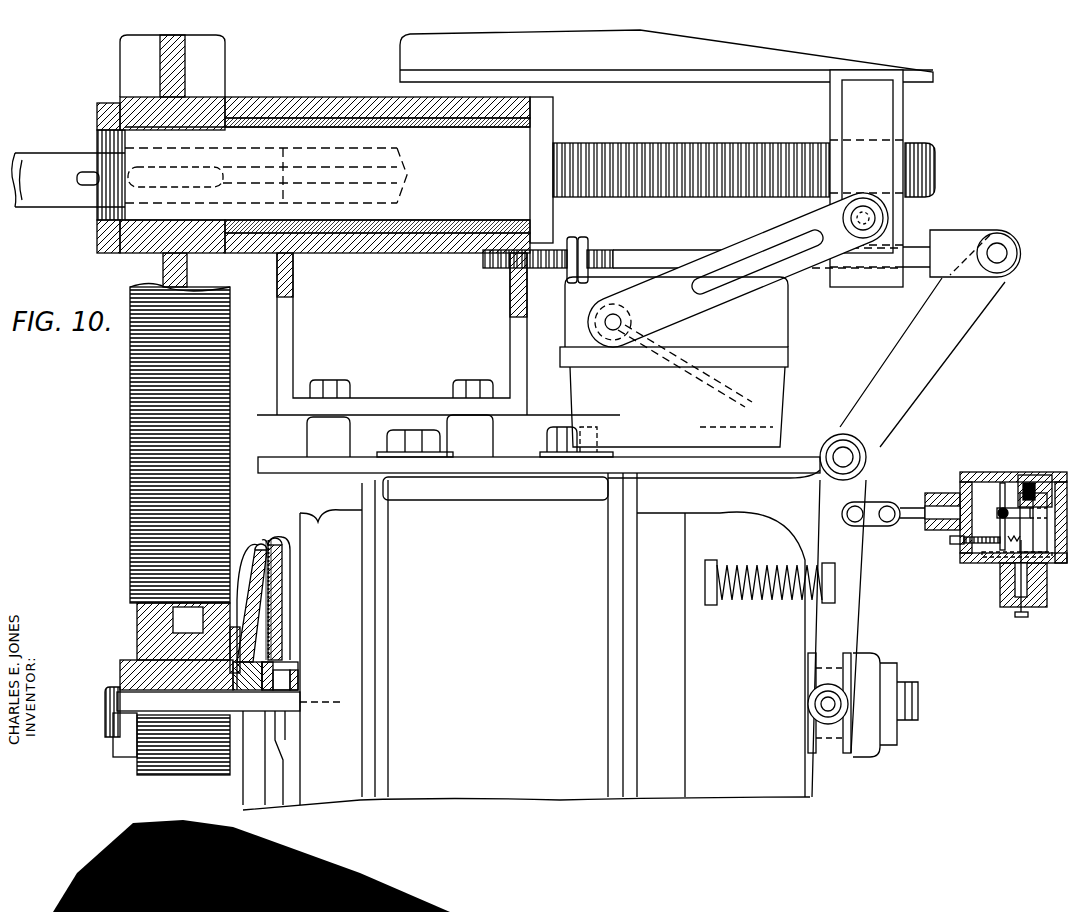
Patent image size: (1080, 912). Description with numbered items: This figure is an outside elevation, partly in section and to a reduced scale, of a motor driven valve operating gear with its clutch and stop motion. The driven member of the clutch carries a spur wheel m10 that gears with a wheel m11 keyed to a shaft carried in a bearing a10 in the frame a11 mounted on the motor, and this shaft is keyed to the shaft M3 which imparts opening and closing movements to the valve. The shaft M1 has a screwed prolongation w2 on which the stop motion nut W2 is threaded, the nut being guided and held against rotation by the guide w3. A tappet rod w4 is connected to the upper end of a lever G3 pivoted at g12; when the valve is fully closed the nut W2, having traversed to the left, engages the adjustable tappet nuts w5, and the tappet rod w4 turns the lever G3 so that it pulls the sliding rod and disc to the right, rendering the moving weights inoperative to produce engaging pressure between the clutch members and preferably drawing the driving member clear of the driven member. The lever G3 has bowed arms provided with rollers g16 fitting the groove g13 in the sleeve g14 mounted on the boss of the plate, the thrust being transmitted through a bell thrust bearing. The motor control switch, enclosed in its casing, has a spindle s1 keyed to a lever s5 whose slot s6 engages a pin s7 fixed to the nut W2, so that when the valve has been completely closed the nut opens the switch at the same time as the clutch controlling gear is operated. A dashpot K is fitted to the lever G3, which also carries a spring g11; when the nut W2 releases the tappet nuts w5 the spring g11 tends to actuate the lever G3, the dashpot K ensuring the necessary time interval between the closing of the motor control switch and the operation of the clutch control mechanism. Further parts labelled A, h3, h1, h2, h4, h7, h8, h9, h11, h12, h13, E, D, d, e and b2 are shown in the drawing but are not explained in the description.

The shaft M3 is at (37, 163).
The shaft M1 is at (440, 193).
The frame a11 is at (293, 107).
The bearing a10 is at (337, 235).
The guide w3 is at (757, 78).
The screwed prolongation w2 is at (637, 157).
The stop motion nut W2 is at (873, 117).
The tappet rod w4 is at (665, 257).
The adjustable tappet nuts w5 is at (582, 243).
The lever s5 is at (708, 297).
The slot s6 is at (813, 250).
The spindle s1 is at (627, 317).
The pin s7 is at (870, 220).
The lever G3 is at (933, 358).
The pivot g12 is at (850, 460).
The machine frame A is at (526, 641).
The spring g11 is at (770, 598).
The switch link h3 is at (867, 513).
The rollers g16 is at (827, 690).
The sleeve g14 is at (820, 727).
The groove g13 is at (853, 747).
The dashpot K is at (985, 563).
The switch base h7 is at (1043, 590).
The base screw h8 is at (1020, 617).
The adjusting screw h13 is at (952, 547).
The contact lever h2 is at (983, 487).
The contact spring h11 is at (1002, 503).
The contact block h4 is at (1044, 490).
The contact screw h9 is at (1030, 472).
The contact member h1 is at (1032, 538).
The contact bar h12 is at (1007, 567).
The wheel m11 is at (167, 417).
The spur wheel m10 is at (133, 655).
The clamp plate E is at (252, 550).
The guide plate D is at (273, 540).
The strip d is at (273, 557).
The plate edge e is at (260, 540).
The clamp block b2 is at (293, 680).